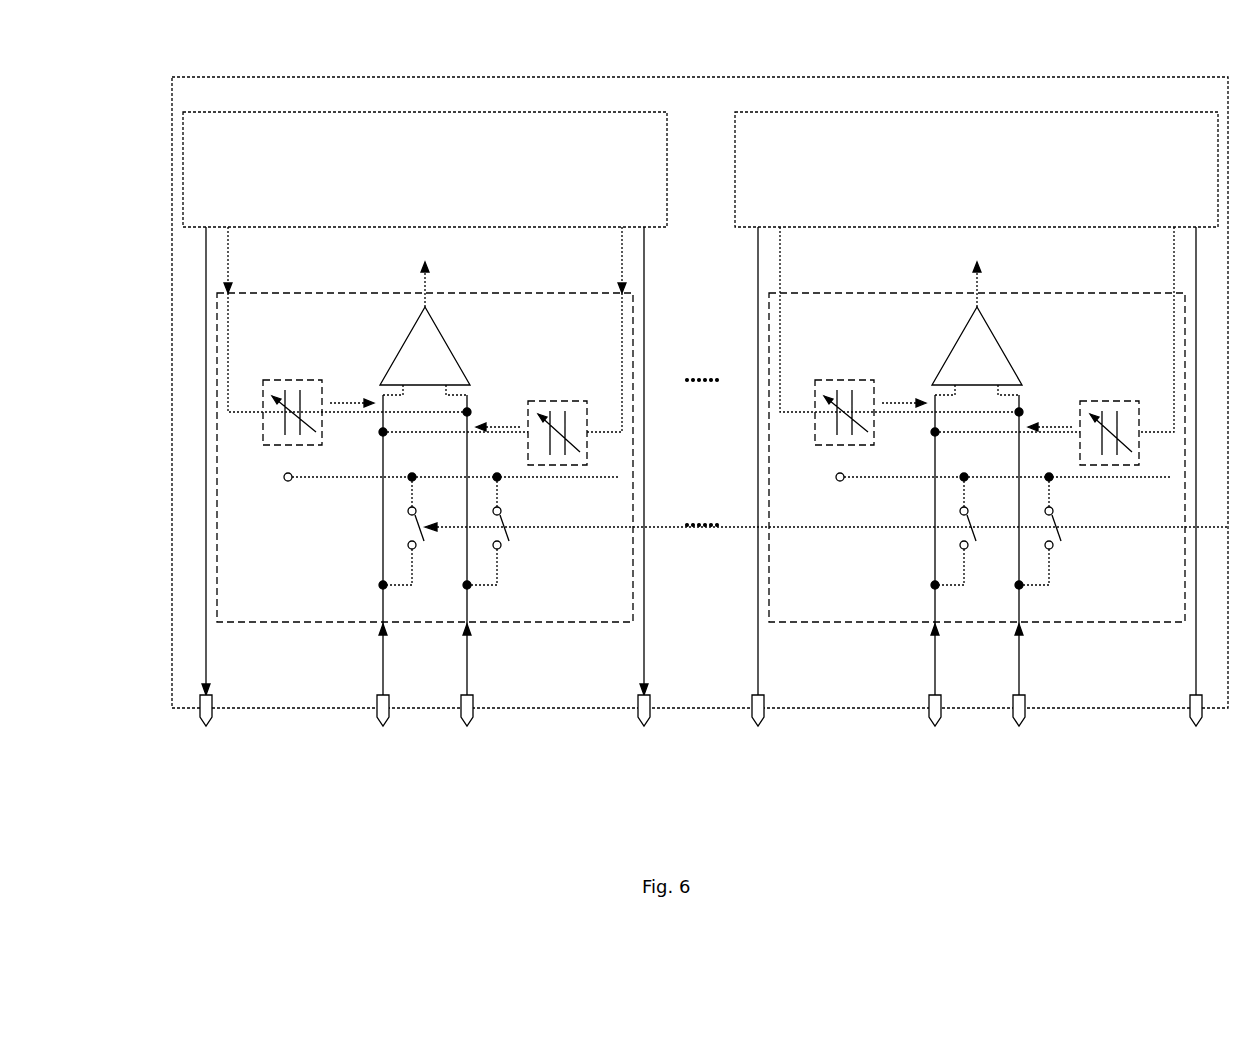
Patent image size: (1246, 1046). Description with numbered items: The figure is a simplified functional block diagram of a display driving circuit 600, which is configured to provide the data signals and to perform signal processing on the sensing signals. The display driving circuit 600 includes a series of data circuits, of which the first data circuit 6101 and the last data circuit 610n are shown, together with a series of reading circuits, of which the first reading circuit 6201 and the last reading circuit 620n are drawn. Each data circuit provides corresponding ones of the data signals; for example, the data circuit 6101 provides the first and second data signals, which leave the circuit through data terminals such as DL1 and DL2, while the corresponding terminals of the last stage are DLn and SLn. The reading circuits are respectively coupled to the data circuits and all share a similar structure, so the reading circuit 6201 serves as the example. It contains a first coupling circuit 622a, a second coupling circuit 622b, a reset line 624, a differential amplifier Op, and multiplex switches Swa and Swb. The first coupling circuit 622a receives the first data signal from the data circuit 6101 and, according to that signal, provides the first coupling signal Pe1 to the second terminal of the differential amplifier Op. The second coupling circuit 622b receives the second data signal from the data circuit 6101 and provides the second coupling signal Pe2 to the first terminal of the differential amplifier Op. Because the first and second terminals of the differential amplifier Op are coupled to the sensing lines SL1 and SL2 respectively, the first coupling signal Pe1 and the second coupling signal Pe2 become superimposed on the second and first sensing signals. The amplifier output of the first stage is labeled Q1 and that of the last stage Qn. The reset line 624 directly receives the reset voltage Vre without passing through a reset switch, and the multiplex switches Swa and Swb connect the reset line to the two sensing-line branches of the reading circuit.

The display driving circuit 600 is at (818, 77).
The data circuit 6101 is at (595, 110).
The data circuit 610n is at (1145, 112).
The reading circuit 6201 is at (510, 293).
The reading circuit 620n is at (1062, 293).
The first coupling circuit 622a is at (290, 380).
The second coupling circuit 622b is at (555, 400).
The reset line 624 is at (545, 479).
The differential amplifier Op is at (395, 340).
The multiplex switch Swa is at (417, 550).
The multiplex switch Swb is at (502, 550).
The first coupling signal Pe1 is at (352, 393).
The second coupling signal Pe2 is at (498, 417).
The reset voltage Vre is at (258, 478).
The first output signal Q1 is at (426, 270).
The n-th output signal Qn is at (977, 270).
The first data line terminal DL1 is at (206, 728).
The sensing line SL1 is at (383, 728).
The sensing line SL2 is at (467, 728).
The second data line terminal DL2 is at (644, 728).
The n-th sensing line terminal SLn is at (1019, 728).
The n-th data line terminal DLn is at (1196, 728).